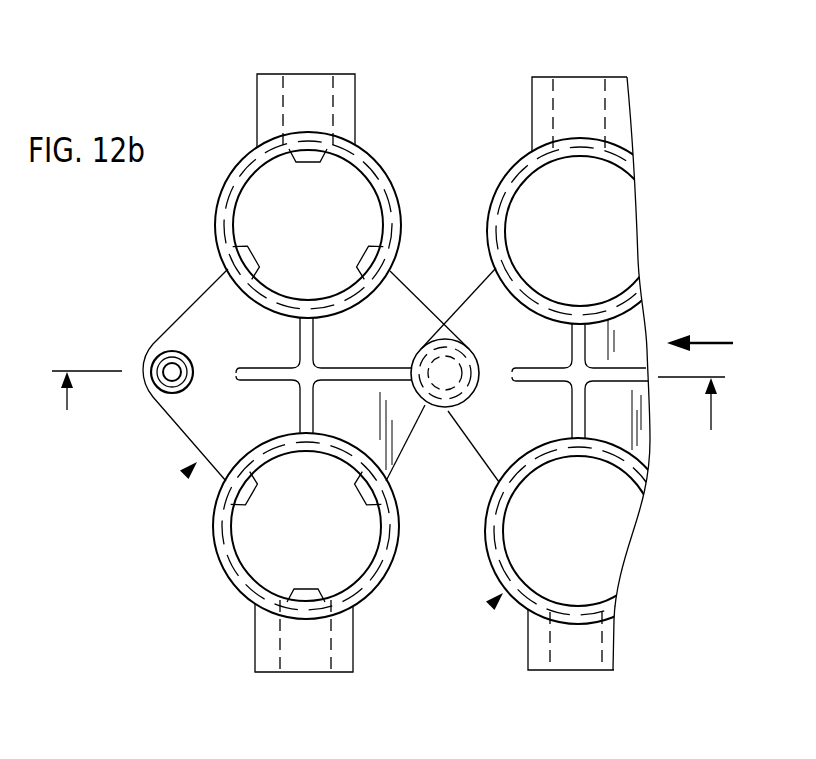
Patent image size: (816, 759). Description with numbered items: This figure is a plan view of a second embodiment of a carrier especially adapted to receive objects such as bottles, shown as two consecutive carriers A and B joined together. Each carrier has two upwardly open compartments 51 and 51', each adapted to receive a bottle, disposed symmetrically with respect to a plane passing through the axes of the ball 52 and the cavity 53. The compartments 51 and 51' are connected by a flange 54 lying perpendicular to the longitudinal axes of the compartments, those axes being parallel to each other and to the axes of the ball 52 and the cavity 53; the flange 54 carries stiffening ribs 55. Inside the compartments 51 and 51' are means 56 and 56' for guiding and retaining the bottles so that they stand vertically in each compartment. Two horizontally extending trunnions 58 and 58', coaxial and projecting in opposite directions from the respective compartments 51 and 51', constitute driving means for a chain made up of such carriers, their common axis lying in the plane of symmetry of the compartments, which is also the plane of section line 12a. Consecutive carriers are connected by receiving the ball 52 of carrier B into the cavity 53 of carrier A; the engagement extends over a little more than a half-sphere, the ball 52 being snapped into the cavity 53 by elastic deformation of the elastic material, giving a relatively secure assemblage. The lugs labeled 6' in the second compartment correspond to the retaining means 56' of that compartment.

The compartment 51 is at (444, 228).
The compartment 51' is at (442, 528).
The ball 52 is at (184, 391).
The cavity 53 is at (473, 347).
The flange 54 is at (411, 314).
The stiffening ribs 55 is at (343, 372).
The means for guiding and retaining 56 is at (443, 219).
The means for guiding and retaining 56' is at (306, 537).
The lug 6' is at (577, 541).
The trunnion 58 is at (442, 112).
The trunnion 58' is at (434, 651).
The section line 12a is at (393, 410).
The carrier A is at (186, 474).
The carrier B is at (493, 612).